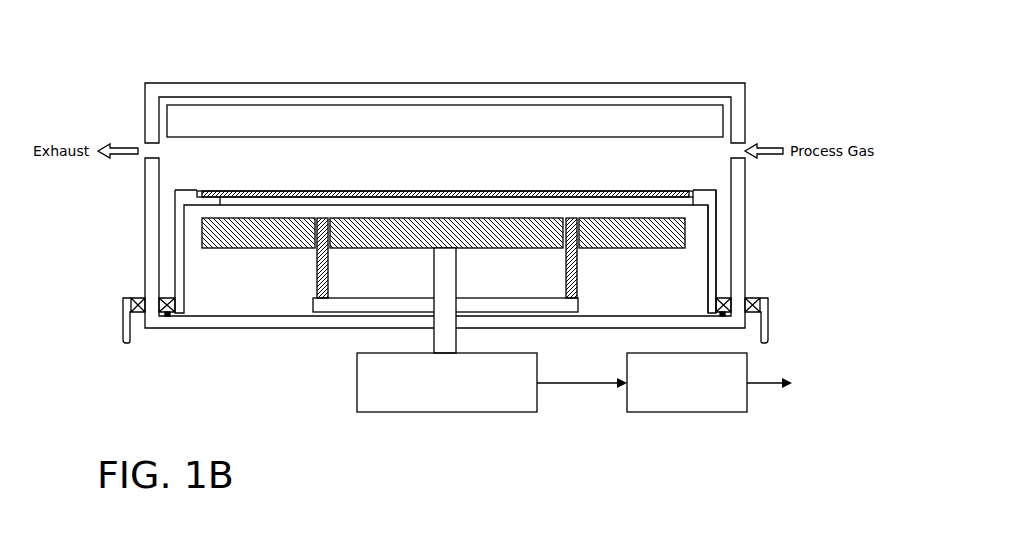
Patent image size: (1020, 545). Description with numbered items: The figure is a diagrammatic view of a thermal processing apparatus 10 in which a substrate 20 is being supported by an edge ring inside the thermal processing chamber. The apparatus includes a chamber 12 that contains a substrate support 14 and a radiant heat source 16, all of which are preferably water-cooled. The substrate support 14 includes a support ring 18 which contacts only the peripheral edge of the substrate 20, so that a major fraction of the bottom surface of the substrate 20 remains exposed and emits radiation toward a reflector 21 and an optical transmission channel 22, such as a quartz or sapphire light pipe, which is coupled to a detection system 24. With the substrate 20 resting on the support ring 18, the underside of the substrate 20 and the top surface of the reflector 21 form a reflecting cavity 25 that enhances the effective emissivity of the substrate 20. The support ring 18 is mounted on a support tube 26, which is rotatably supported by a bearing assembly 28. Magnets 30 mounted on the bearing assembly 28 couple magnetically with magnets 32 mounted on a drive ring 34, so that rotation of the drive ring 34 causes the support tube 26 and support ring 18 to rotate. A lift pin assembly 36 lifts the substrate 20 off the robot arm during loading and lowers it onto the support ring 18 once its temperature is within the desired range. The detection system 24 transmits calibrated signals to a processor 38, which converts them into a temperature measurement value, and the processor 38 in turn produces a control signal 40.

The thermal processing apparatus 10 is at (784, 49).
The chamber 12 is at (745, 118).
The substrate support 14 is at (214, 169).
The radiant heat source 16 is at (442, 138).
The support ring 18 is at (670, 191).
The substrate 20 is at (330, 190).
The reflector 21 is at (367, 218).
The optical transmission channel 22 is at (465, 338).
The detection system 24 is at (375, 352).
The reflecting cavity 25 is at (456, 207).
The support tube 26 is at (708, 283).
The bearing assembly 28 is at (168, 318).
The magnets 30 is at (175, 298).
The magnets 32 is at (138, 297).
The drive ring 34 is at (122, 329).
The lift pin assembly 36 is at (595, 263).
The processor 38 is at (625, 358).
The control signal 40 is at (832, 383).